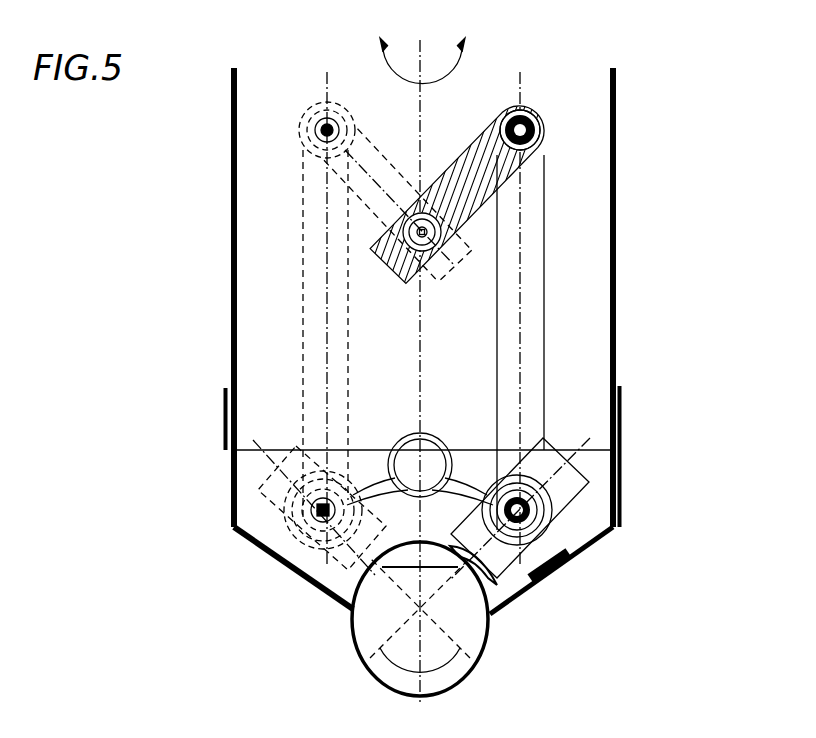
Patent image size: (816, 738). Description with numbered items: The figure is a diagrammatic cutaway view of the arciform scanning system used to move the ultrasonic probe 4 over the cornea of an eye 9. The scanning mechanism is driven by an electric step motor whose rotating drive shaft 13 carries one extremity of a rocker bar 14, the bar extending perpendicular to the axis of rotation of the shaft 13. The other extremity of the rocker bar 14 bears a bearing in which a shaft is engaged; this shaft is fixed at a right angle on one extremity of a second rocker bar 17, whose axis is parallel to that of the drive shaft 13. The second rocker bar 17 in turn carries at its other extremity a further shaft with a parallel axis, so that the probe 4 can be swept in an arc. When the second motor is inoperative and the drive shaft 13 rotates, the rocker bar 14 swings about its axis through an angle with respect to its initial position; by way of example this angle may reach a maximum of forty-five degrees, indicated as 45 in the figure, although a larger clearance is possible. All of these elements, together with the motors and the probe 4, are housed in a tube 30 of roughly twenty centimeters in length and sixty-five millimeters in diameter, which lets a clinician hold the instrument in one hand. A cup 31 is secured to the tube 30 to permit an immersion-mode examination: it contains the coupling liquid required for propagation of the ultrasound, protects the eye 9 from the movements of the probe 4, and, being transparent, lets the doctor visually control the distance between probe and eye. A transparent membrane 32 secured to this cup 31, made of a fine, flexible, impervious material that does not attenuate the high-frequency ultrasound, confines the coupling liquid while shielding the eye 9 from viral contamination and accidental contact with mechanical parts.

The probe 4 is at (378, 521).
The eye 9 is at (451, 619).
The rotating drive shaft 13 is at (402, 283).
The rocker bar 14 is at (379, 149).
The second rocker bar 17 is at (303, 350).
The tube 30 is at (617, 252).
The cup 31 is at (585, 550).
The transparent membrane 32 is at (497, 585).
The 45 degree angle 45 is at (421, 670).